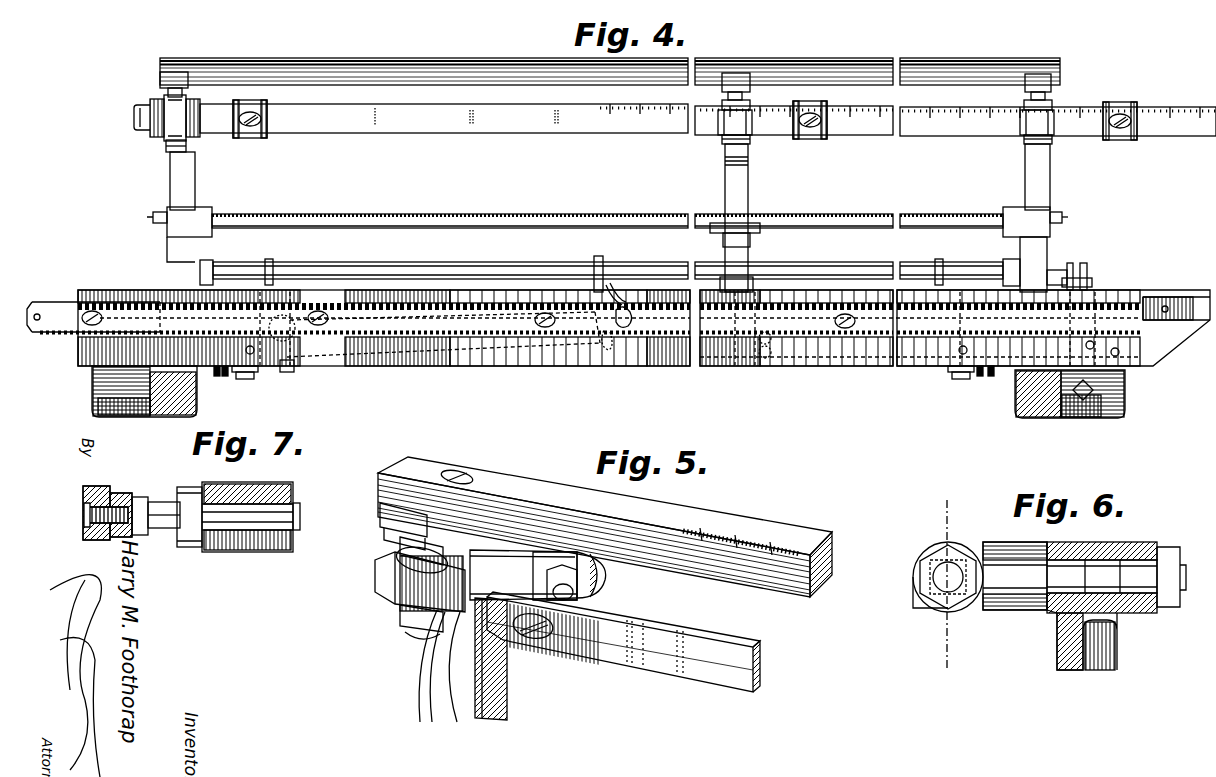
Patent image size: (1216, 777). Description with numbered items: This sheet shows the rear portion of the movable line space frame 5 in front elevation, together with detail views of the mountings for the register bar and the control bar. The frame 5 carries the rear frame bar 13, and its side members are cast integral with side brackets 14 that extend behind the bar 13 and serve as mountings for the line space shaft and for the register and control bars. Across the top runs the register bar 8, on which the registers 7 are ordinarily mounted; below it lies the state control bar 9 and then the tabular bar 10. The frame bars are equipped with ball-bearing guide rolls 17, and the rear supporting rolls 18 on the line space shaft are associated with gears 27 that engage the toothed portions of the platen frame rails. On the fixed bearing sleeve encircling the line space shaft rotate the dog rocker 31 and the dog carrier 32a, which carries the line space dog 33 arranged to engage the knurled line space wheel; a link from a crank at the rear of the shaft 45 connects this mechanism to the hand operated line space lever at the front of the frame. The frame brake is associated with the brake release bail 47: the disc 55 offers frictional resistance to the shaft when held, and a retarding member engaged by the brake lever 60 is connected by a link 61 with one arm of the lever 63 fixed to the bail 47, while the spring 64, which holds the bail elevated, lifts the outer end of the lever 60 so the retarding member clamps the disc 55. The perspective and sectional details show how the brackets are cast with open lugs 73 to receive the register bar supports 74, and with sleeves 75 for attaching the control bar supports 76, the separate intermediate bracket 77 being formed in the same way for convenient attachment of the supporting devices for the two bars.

In FIG. 4, the line space frame 5 is at (152, 415).
In FIG. 6, the registers 7 is at (944, 589).
In FIG. 4, the register bar 8 is at (414, 60).
In FIG. 5, the register bar 8 is at (832, 560).
In FIG. 4, the state control bar 9 is at (968, 130).
In FIG. 7, the state control bar 9 is at (83, 491).
In FIG. 5, the state control bar 9 is at (757, 645).
In FIG. 4, the tabular bar 10 is at (600, 213).
In FIG. 4, the rear frame bar 13 is at (810, 360).
In FIG. 4, the side brackets 14 is at (170, 178).
In FIG. 4, the guide rolls 17 is at (258, 379).
In FIG. 4, the rear supporting rolls 18 is at (229, 380).
In FIG. 4, the gears 27 is at (218, 378).
In FIG. 4, the dog rocker 31 is at (1070, 263).
In FIG. 4, the dog carrier 32a is at (1094, 283).
In FIG. 4, the line space dog 33 is at (1087, 265).
In FIG. 4, the shaft 45 is at (1082, 400).
In FIG. 4, the brake release bail 47 is at (520, 257).
In FIG. 4, the disc 55 is at (293, 372).
In FIG. 4, the brake lever 60 is at (468, 350).
In FIG. 4, the link 61 is at (598, 300).
In FIG. 4, the lever 63 is at (620, 302).
In FIG. 4, the spring 64 is at (630, 318).
In FIG. 4, the open lugs 73 is at (150, 128).
In FIG. 5, the open lugs 73 is at (385, 595).
In FIG. 4, the register bar supports 74 is at (168, 148).
In FIG. 5, the register bar supports 74 is at (418, 636).
In FIG. 4, the sleeves 75 is at (152, 105).
In FIG. 5, the sleeves 75 is at (478, 558).
In FIG. 6, the sleeves 75 is at (1140, 547).
In FIG. 4, the control bar supports 76 is at (262, 137).
In FIG. 7, the control bar supports 76 is at (285, 486).
In FIG. 5, the control bar supports 76 is at (605, 590).
In FIG. 6, the control bar supports 76 is at (920, 605).
In FIG. 4, the intermediate bracket 77 is at (750, 190).